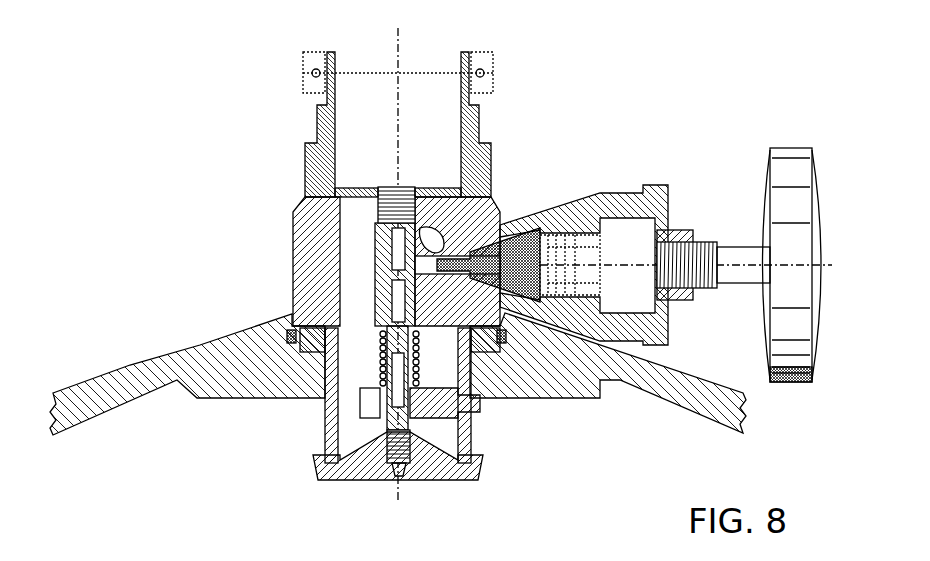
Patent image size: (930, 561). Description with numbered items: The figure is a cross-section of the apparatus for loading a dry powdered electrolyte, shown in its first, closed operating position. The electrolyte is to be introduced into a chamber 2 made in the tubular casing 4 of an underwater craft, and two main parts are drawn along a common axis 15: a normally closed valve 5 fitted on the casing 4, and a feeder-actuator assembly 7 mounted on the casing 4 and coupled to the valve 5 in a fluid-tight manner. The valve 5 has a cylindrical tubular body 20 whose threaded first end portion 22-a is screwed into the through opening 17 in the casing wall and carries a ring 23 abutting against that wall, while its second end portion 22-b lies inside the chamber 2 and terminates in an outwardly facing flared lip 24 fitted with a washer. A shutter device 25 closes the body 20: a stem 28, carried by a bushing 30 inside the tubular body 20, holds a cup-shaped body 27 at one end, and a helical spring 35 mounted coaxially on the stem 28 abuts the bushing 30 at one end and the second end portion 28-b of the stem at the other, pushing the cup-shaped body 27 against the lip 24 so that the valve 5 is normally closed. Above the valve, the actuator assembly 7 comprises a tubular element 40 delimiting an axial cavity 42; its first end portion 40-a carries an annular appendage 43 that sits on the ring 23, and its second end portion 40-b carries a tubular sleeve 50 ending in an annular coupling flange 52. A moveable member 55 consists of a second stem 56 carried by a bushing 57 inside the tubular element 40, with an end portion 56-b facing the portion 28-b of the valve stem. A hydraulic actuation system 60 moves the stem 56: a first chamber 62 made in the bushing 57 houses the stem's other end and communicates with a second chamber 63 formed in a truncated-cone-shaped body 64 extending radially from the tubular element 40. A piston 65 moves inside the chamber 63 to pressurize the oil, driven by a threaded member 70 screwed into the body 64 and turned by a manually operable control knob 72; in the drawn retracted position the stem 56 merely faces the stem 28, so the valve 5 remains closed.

The chamber 2 is at (147, 418).
The tubular casing 4 is at (199, 294).
The valve 5 is at (283, 462).
The feeder-actuator assembly 7 is at (552, 128).
The axis 15 is at (398, 50).
The through opening 17 is at (321, 409).
The cylindrical tubular body 20 is at (380, 417).
The first end portion 22-a is at (515, 335).
The second end portion 22-b is at (304, 442).
The ring 23 is at (455, 348).
The flared lip 24 is at (483, 465).
The shutter device 25 is at (447, 427).
The cup-shaped body 27 is at (437, 460).
The stem 28 is at (369, 436).
The second end portion of the stem 28-b is at (386, 322).
The bushing 30 is at (418, 391).
The helical spring 35 is at (378, 373).
The tubular element 40 is at (390, 218).
The first end portion 40-a is at (285, 296).
The second end portion 40-b is at (296, 137).
The axial cavity 42 is at (354, 210).
The annular appendage 43 is at (293, 347).
The tubular sleeve 50 is at (474, 120).
The annular coupling flange 52 is at (480, 80).
The moveable member 55 is at (437, 235).
The second stem 56 is at (393, 262).
The end portion of the second stem 56-b is at (388, 302).
The bushing 57 is at (372, 241).
The hydraulic actuation system 60 is at (578, 142).
The first chamber 62 is at (411, 197).
The second chamber 63 is at (526, 283).
The truncated-cone-shaped body 64 is at (580, 207).
The piston 65 is at (636, 228).
The threaded member 70 is at (699, 246).
The control knob 72 is at (789, 166).